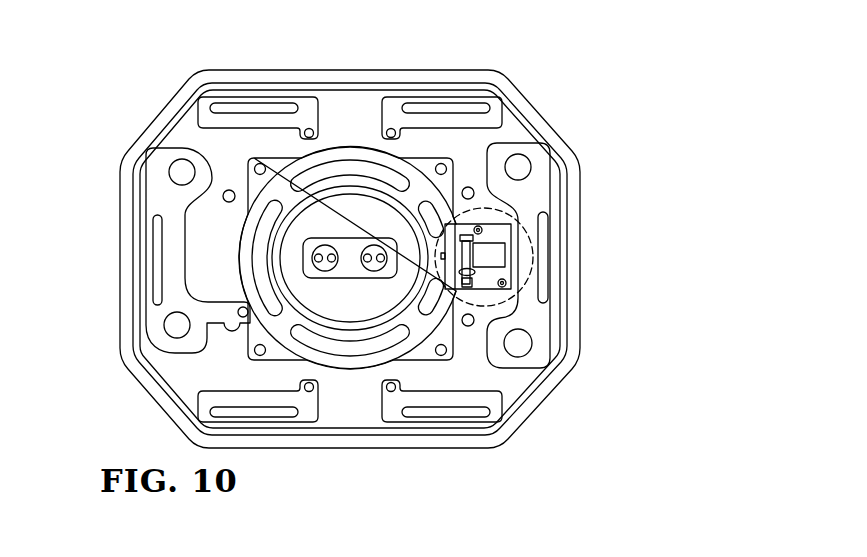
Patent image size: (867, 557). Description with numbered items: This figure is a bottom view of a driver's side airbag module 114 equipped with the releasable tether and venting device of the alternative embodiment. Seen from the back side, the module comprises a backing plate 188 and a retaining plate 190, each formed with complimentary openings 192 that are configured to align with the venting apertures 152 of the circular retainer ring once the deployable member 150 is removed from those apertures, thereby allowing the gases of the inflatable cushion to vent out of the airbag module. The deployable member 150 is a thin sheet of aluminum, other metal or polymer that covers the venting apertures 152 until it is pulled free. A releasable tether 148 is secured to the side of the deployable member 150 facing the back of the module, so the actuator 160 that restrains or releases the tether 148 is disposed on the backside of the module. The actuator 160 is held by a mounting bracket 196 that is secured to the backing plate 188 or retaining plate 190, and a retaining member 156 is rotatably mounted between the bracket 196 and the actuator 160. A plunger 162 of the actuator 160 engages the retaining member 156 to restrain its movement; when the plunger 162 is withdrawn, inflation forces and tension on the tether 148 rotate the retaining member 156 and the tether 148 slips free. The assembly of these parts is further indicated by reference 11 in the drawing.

The driver's side airbag module 114 is at (559, 111).
The backing plate 188 is at (360, 114).
The retaining plate 190 is at (300, 97).
The retaining member 156 is at (466, 236).
The plunger 162 is at (480, 205).
The connector assembly 11 is at (521, 217).
The deployable member 150 is at (255, 248).
The actuator 160 is at (498, 248).
The releasable tether 148 is at (472, 270).
The mounting bracket 196 is at (488, 285).
The complimentary openings 192 is at (428, 296).
The venting apertures 152 is at (455, 298).